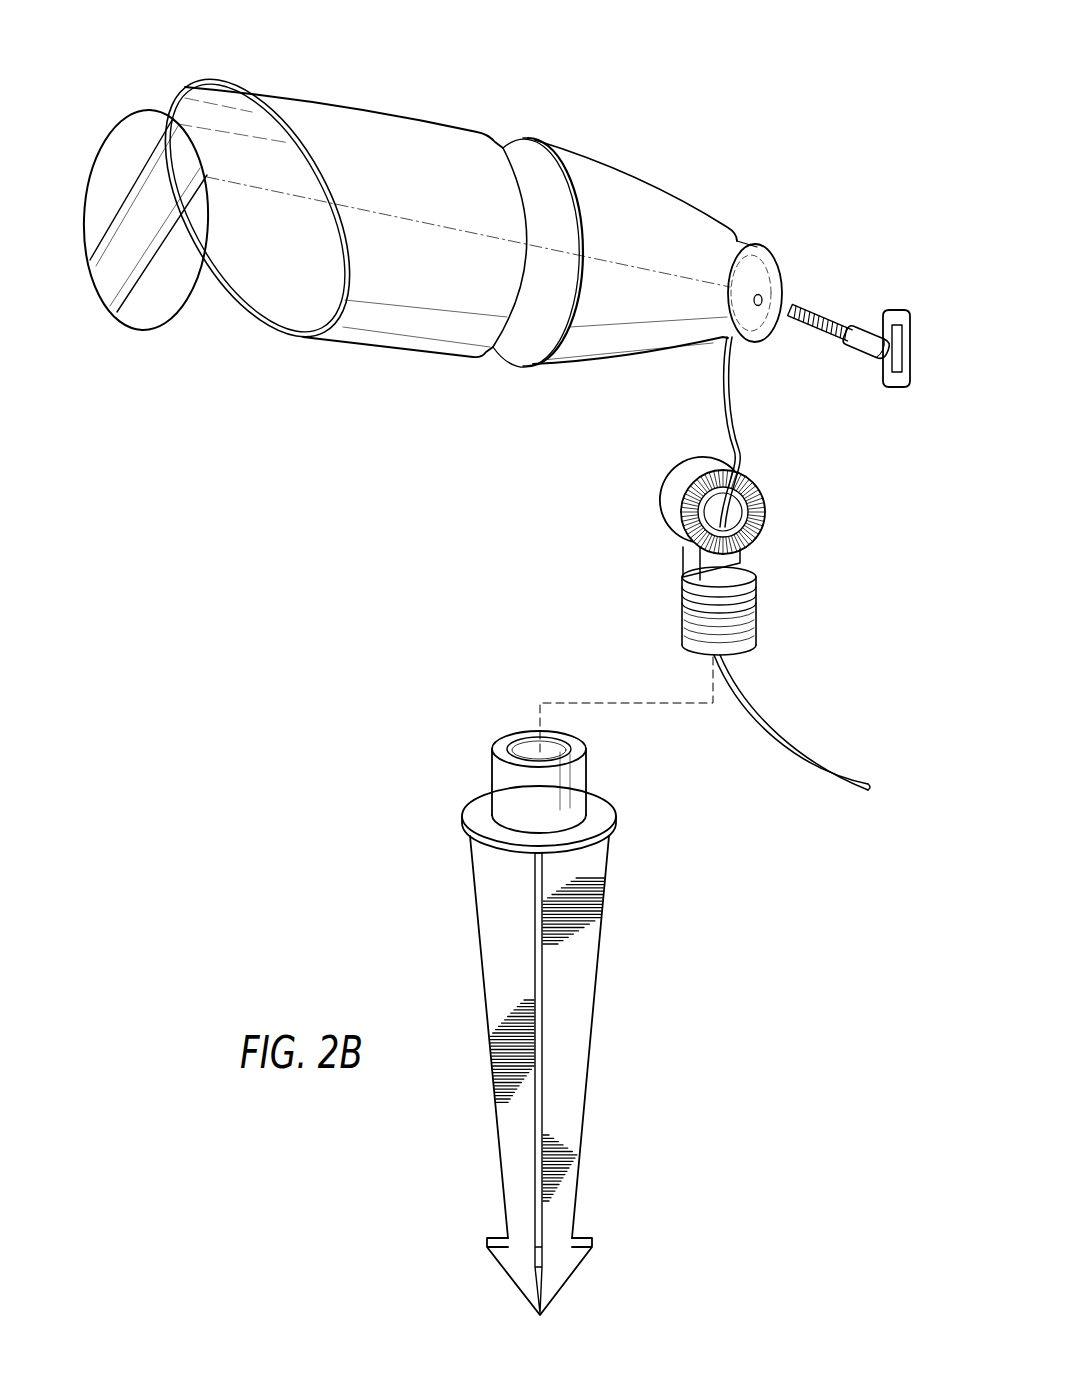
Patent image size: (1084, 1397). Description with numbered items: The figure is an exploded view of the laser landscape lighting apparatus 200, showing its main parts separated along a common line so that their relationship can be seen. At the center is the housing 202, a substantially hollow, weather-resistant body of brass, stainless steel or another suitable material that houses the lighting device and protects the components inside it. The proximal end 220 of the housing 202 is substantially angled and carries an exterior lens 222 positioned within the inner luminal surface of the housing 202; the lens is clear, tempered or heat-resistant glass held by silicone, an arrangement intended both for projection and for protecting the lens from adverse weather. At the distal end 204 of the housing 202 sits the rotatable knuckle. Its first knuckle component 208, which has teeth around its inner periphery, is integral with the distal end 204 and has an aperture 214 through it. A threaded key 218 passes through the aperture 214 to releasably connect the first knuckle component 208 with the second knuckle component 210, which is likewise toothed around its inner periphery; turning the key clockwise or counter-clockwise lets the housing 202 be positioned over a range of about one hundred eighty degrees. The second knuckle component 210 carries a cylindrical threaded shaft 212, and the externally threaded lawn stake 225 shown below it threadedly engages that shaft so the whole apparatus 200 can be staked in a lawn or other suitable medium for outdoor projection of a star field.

The laser landscape lighting apparatus 200 is at (666, 96).
The housing 202 is at (380, 112).
The distal end 204 is at (709, 184).
The first knuckle component 208 is at (775, 247).
The second knuckle component 210 is at (667, 482).
The cylindrical threaded shaft 212 is at (757, 620).
The aperture 214 is at (762, 300).
The threaded key 218 is at (885, 385).
The proximal end 220 is at (168, 86).
The exterior lens 222 is at (150, 313).
The lawn stake 225 is at (473, 888).